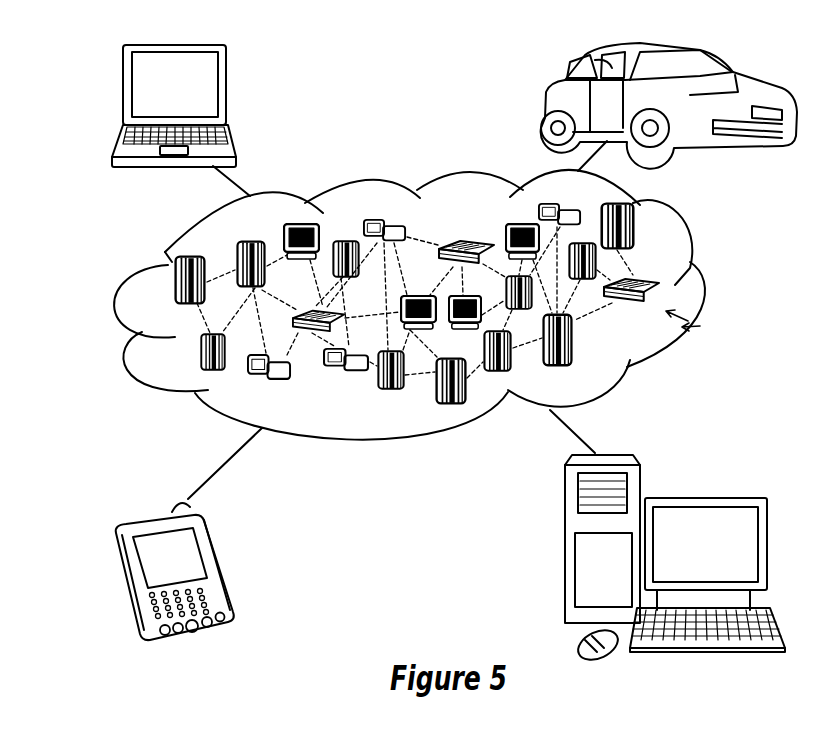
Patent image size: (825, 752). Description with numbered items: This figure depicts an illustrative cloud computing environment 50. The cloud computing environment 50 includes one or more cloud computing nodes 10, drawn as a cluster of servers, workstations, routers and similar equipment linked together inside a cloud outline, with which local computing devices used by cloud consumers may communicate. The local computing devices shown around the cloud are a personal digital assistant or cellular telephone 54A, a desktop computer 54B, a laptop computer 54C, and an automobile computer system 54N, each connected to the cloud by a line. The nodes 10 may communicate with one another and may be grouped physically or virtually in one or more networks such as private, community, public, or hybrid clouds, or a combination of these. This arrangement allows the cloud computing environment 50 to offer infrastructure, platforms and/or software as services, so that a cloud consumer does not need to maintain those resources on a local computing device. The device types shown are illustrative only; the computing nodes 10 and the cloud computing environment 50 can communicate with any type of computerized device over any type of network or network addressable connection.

The cloud computing environment 50 is at (705, 288).
The cloud computing nodes 10 is at (700, 327).
The personal digital assistant (PDA) or cellular telephone 54A is at (222, 567).
The desktop computer 54B is at (701, 497).
The laptop computer 54C is at (227, 91).
The automobile computer system 54N is at (545, 100).